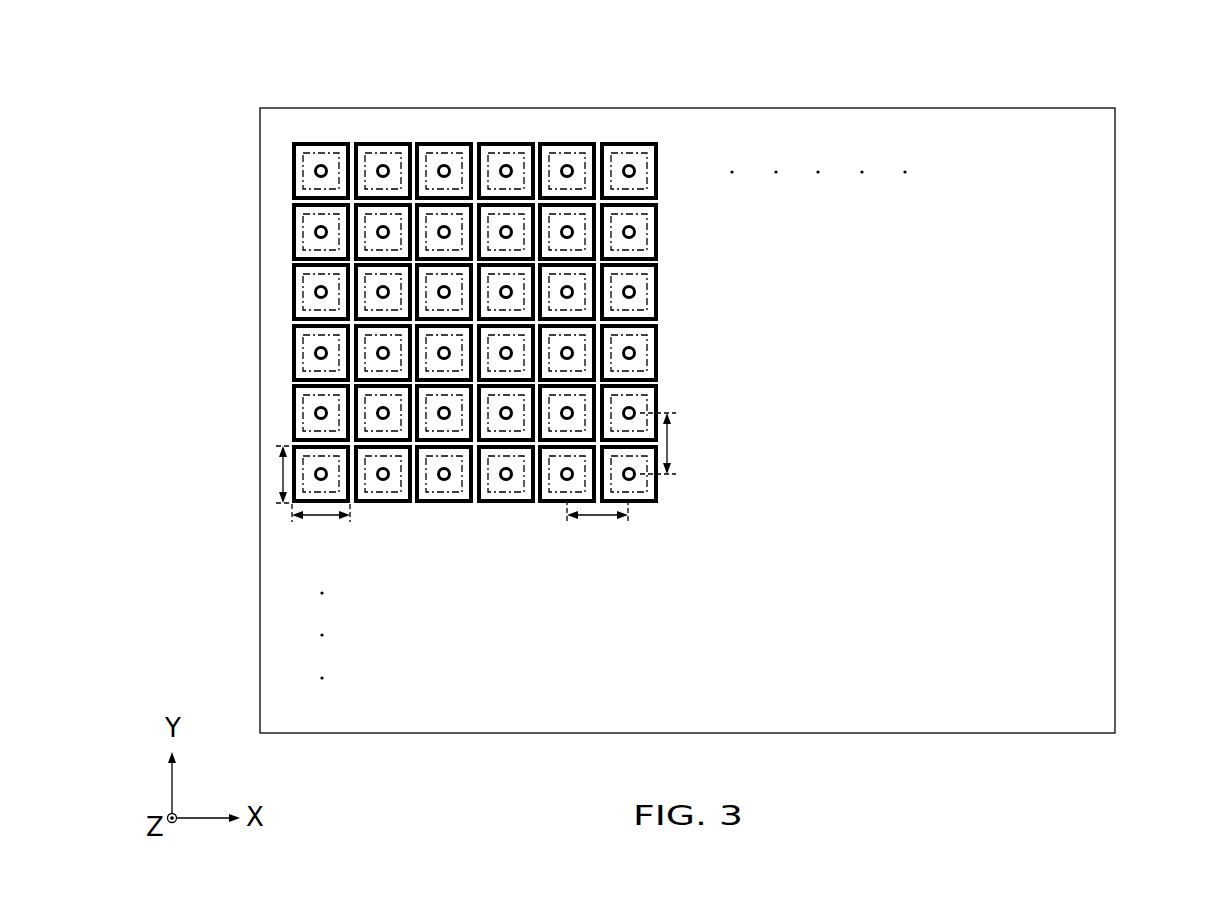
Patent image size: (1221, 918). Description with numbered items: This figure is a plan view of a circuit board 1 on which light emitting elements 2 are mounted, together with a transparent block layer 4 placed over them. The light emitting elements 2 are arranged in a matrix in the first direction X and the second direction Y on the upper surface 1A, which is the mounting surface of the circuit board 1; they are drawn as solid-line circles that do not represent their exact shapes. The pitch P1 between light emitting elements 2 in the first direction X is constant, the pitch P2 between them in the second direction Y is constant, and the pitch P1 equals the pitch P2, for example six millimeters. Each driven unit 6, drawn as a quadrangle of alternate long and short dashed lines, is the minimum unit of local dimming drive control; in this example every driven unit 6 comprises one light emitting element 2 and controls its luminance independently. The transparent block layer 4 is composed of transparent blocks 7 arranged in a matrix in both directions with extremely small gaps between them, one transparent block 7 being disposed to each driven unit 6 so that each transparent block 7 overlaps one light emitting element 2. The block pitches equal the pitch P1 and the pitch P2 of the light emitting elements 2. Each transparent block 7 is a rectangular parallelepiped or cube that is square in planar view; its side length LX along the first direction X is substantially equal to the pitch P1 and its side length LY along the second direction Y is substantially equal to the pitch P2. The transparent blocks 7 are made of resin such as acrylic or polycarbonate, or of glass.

The circuit board 1 is at (1115, 108).
The upper surface 1A is at (1090, 255).
The light emitting element 2 is at (494, 309).
The transparent block layer 4 is at (471, 356).
The driven unit 6 is at (338, 153).
The transparent block 7 is at (292, 402).
The pitch P1 is at (597, 520).
The pitch P2 is at (672, 443).
The length LX is at (322, 520).
The length LY is at (283, 478).